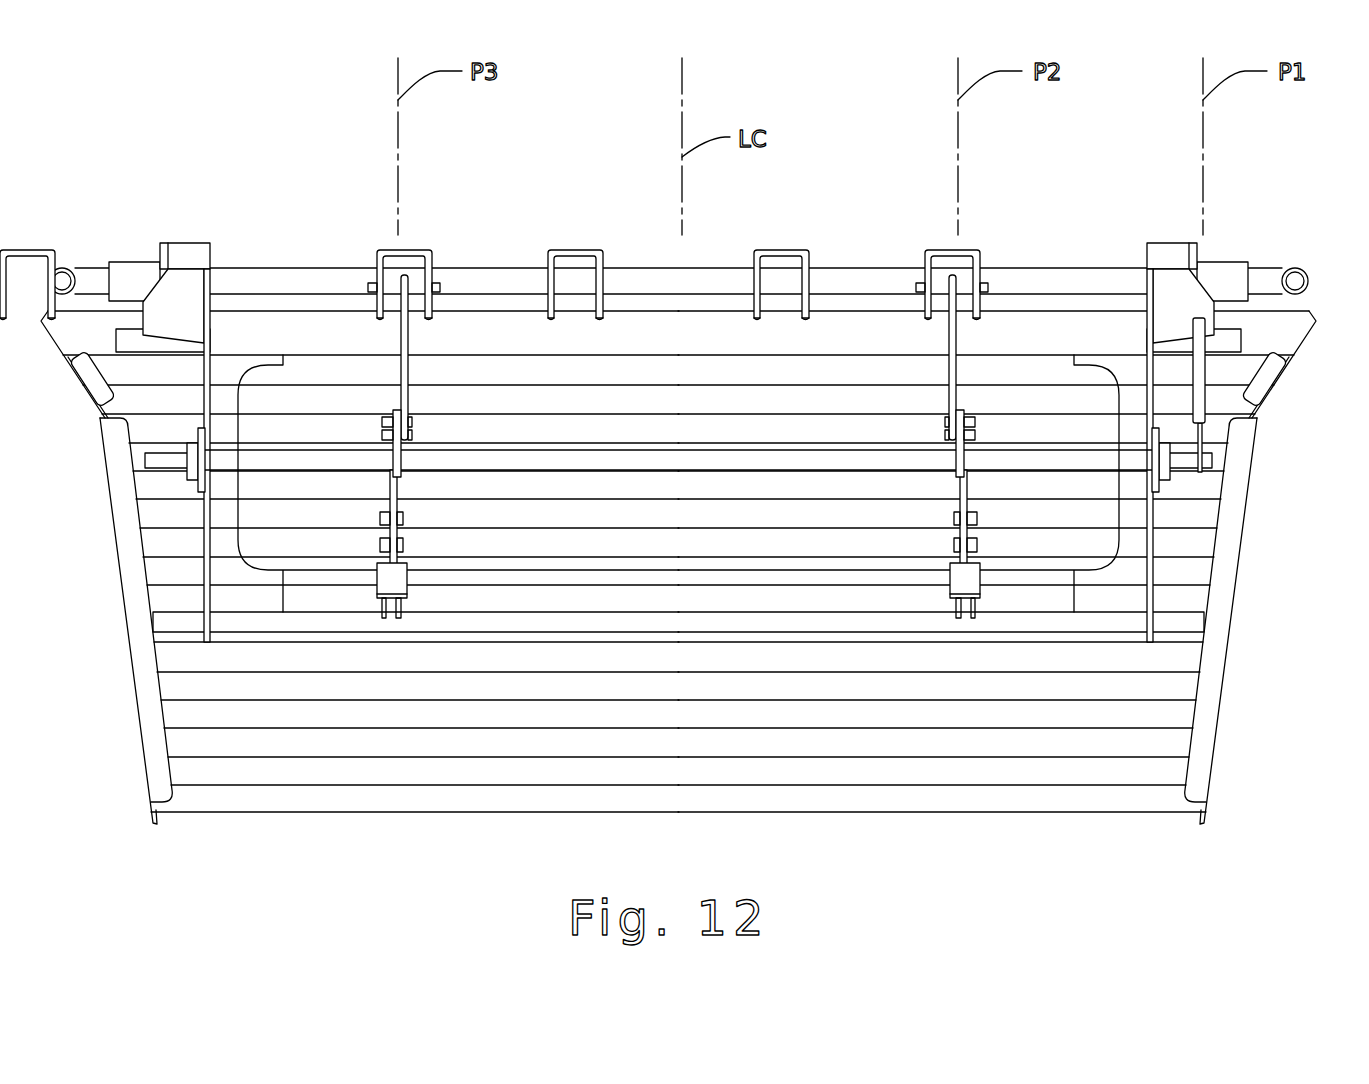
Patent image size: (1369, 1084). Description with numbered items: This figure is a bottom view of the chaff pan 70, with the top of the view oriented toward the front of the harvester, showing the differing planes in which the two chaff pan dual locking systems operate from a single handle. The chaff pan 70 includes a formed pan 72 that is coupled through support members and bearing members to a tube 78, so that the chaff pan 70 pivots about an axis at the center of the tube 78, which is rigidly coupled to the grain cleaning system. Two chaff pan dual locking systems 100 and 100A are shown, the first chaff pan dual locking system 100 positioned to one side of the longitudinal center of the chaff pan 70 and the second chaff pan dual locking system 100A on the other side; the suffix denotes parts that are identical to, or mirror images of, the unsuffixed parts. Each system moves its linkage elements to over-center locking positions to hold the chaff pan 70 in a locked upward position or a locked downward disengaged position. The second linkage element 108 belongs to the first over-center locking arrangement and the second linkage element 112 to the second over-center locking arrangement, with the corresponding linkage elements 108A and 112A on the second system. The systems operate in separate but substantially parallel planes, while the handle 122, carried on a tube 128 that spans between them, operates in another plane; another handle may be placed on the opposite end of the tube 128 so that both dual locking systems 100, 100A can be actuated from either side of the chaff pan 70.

The chaff pan 70 is at (1289, 180).
The formed pan 72 is at (457, 813).
The tube 78 is at (1294, 268).
The chaff pan dual locking system 100 is at (1011, 232).
The second chaff pan dual locking system 100A is at (457, 233).
The second linkage element 108 is at (950, 365).
The second linkage element 108A is at (408, 365).
The second linkage element 112 is at (968, 503).
The second linkage element 112A is at (392, 502).
The handle 122 is at (1203, 345).
The tube 128 is at (625, 472).